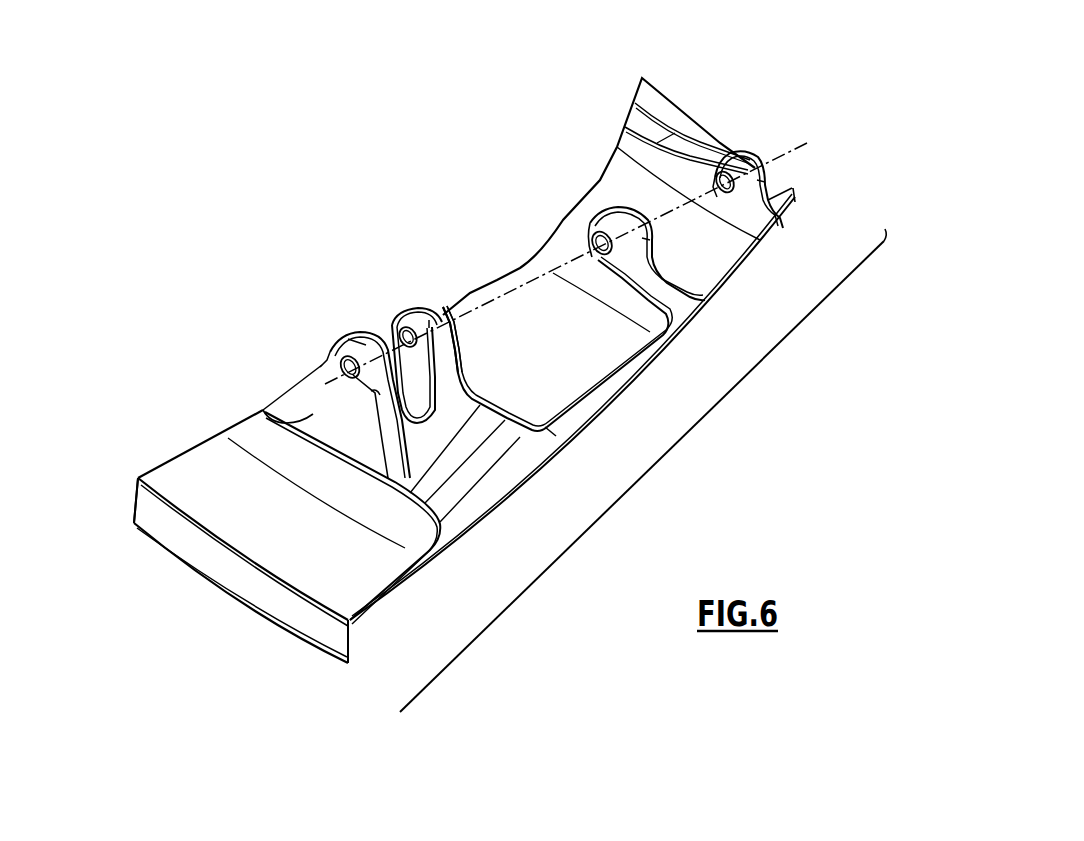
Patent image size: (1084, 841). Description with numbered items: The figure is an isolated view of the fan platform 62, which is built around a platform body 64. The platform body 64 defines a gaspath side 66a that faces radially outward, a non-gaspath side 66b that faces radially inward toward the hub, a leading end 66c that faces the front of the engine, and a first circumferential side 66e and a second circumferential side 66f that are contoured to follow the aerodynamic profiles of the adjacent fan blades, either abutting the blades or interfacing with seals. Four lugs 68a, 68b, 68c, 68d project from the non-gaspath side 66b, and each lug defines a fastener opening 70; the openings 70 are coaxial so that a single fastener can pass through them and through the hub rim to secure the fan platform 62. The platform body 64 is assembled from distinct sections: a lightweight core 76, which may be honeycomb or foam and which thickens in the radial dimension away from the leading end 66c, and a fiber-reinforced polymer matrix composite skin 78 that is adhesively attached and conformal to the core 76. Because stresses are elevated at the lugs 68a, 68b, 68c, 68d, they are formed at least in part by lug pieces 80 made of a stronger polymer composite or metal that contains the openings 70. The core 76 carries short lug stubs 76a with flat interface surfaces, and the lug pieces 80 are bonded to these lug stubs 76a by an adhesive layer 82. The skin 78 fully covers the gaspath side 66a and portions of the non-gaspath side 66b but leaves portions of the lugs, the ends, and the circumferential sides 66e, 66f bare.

The fan platform 62 is at (192, 387).
The platform body 64 is at (614, 507).
The gaspath side 66a is at (146, 551).
The non-gaspath side 66b is at (500, 318).
The leading end 66c is at (679, 94).
The first circumferential side 66e is at (556, 437).
The second circumferential side 66f is at (136, 493).
The lug 68a is at (757, 149).
The lug 68b is at (612, 210).
The lug 68c is at (416, 304).
The lug 68d is at (356, 332).
The fastener opening 70 is at (345, 371).
The core 76 is at (414, 583).
The lug stub 76a is at (394, 481).
The fiber-reinforced polymer matrix composite skin 78 is at (574, 362).
The lug piece 80 is at (366, 345).
The adhesive layer 82 is at (375, 395).